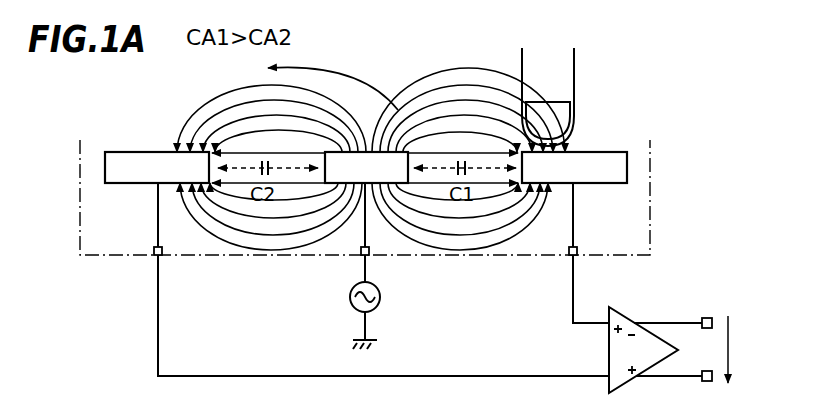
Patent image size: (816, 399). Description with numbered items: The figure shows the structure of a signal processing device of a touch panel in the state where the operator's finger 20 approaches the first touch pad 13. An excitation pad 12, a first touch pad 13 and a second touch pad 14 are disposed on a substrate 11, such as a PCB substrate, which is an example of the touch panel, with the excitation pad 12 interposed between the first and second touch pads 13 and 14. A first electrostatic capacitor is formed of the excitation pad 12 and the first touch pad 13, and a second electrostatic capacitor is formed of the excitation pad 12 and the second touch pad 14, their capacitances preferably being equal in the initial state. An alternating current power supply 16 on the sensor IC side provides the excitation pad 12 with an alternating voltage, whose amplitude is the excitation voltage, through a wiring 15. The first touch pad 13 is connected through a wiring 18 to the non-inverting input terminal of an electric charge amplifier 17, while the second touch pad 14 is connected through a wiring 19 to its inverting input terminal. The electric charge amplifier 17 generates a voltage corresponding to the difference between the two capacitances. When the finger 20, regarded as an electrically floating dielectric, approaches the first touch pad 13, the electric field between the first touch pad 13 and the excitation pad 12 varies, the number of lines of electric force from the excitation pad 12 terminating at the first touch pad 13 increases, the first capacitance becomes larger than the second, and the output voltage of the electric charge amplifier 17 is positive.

The substrate 11 is at (640, 222).
The excitation pad 12 is at (370, 183).
The first touch pad 13 is at (600, 183).
The second touch pad 14 is at (130, 183).
The wiring 15 is at (364, 270).
The alternating current power supply 16 is at (382, 297).
The electric charge amplifier 17 is at (628, 316).
The wiring 18 is at (572, 298).
The wiring 19 is at (502, 375).
The finger 20 is at (576, 72).